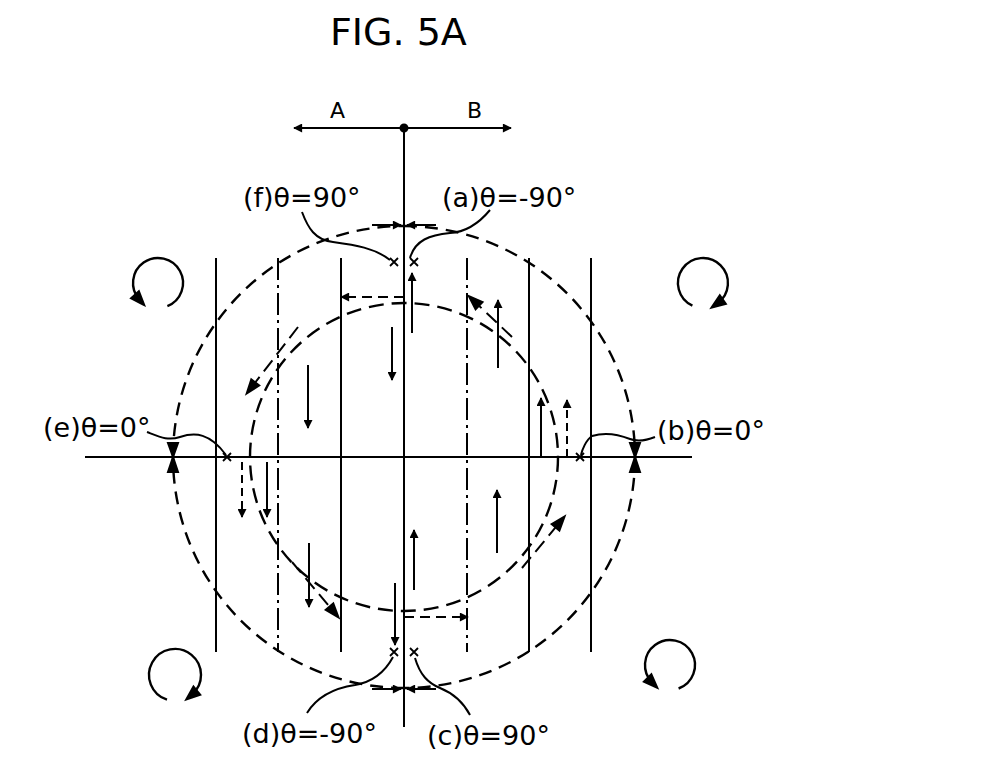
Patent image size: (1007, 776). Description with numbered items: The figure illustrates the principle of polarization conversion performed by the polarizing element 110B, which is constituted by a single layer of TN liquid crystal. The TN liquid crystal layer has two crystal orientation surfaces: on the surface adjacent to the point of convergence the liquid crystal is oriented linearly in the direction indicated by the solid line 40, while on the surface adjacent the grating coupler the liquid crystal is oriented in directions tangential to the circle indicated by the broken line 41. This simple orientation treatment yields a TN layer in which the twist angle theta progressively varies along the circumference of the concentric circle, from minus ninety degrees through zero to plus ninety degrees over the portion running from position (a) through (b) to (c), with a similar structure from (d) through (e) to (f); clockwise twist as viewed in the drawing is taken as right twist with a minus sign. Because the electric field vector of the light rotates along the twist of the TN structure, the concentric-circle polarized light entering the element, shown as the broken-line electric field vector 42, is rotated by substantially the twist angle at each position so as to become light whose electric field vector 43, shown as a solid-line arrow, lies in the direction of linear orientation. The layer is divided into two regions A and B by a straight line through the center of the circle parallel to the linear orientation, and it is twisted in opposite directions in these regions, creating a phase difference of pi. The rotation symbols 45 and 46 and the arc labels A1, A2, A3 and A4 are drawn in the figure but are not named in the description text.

The solid line 40 is at (530, 612).
The broken line circle 41 is at (477, 595).
The electric field vector 42 is at (543, 550).
The electric field vector 43 is at (307, 557).
The counterclockwise rotation direction 45 is at (134, 271).
The clockwise rotation direction 46 is at (733, 270).
The lower-right arc region A1 is at (617, 552).
The upper-right arc region A2 is at (612, 354).
The upper-left arc region A3 is at (187, 372).
The lower-left arc region A4 is at (207, 578).
The polarizing element 110B is at (855, 472).